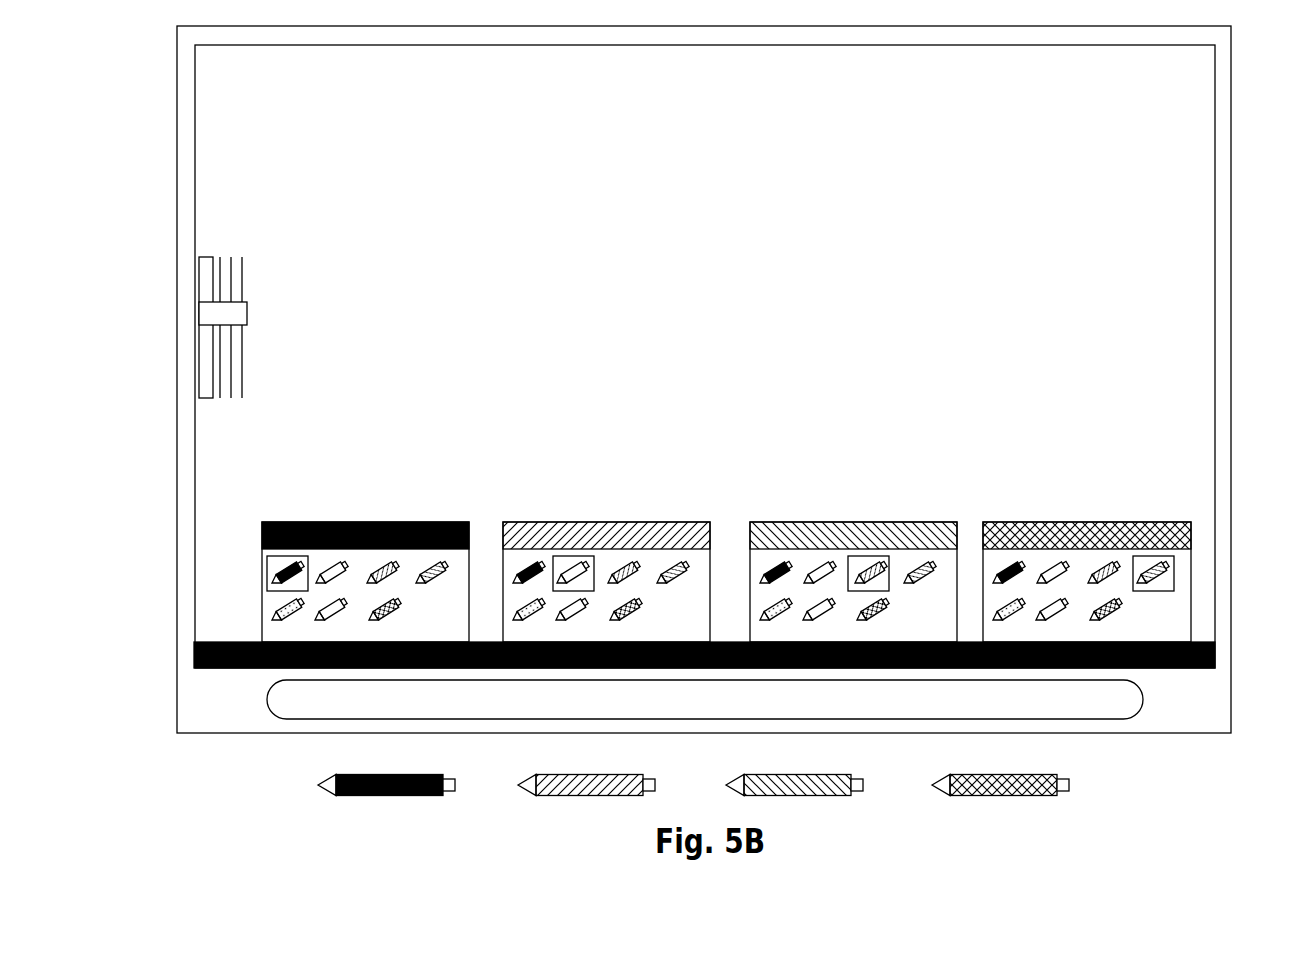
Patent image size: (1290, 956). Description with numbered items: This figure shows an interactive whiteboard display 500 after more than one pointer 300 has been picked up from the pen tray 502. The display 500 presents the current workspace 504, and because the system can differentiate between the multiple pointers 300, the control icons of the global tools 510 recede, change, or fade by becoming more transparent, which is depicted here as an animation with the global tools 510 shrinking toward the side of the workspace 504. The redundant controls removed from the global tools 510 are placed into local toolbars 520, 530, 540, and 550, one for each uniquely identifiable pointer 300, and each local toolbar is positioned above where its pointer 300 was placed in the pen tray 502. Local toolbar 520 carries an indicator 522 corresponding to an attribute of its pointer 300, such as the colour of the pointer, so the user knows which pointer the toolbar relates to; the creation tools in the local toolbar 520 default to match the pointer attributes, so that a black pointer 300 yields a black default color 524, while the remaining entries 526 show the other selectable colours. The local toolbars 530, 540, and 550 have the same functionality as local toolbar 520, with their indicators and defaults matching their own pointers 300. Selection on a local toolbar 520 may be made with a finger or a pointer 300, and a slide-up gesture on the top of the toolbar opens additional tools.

The interactive whiteboard display 500 is at (1236, 50).
The pen tray 502 is at (1108, 693).
The current workspace 504 is at (681, 262).
The global tools 510 is at (235, 273).
The local toolbar 520 is at (295, 538).
The indicator 522 is at (268, 540).
The default color 524 is at (272, 560).
The pencil 526 is at (272, 603).
The local toolbar 530 is at (548, 515).
The local toolbar 540 is at (812, 515).
The local toolbar 550 is at (1057, 510).
The pointer 300 is at (392, 797).